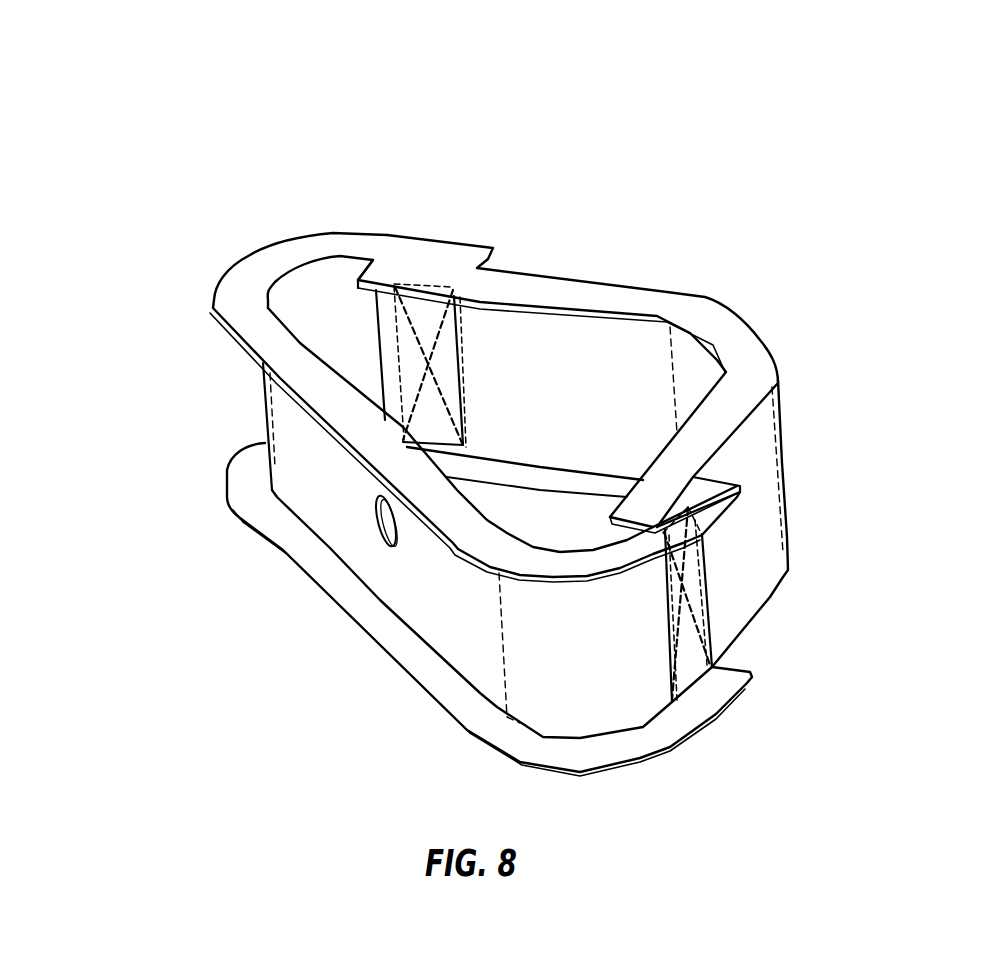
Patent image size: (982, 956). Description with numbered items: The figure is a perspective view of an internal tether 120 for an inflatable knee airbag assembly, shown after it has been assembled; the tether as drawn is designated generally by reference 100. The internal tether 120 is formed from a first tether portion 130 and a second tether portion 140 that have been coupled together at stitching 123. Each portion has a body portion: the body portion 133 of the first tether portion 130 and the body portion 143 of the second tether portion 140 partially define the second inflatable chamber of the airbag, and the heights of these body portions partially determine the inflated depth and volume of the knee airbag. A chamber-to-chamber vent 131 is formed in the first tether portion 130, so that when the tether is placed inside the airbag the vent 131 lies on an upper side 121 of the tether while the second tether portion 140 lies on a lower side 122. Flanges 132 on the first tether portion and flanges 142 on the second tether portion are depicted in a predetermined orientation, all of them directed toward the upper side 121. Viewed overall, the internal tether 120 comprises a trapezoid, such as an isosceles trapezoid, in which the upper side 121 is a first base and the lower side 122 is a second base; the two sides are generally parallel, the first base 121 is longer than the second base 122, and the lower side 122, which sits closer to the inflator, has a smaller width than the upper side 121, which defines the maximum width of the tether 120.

The assembly 100 is at (453, 122).
The internal tether 120 is at (814, 177).
The upper side 121 is at (268, 573).
The lower side 122 is at (820, 365).
The stitching 123 is at (462, 341).
The first tether portion 130 is at (300, 475).
The chamber-to-chamber vent 131 is at (380, 532).
The flanges 132 is at (268, 328).
The body portion 133 is at (433, 593).
The second tether portion 140 is at (690, 282).
The flanges 142 is at (497, 470).
The body portion 143 is at (740, 545).